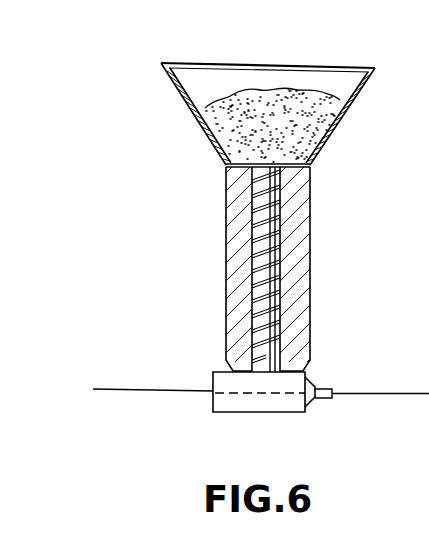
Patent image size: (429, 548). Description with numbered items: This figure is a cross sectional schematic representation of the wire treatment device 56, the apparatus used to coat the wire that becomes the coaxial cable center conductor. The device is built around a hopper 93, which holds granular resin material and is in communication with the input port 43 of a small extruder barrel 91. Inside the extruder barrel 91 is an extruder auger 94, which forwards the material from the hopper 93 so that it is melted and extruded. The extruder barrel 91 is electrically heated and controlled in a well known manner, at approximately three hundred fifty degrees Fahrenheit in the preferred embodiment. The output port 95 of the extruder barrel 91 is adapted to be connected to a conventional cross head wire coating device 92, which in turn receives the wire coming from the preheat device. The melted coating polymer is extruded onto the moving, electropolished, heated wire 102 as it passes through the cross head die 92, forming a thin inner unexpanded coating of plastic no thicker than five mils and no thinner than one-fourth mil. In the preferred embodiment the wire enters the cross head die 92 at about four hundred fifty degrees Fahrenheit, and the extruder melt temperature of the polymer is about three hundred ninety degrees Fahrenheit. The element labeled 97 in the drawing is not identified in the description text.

The hopper 93 is at (345, 70).
The input port 43 is at (225, 148).
The extruder auger 94 is at (272, 192).
The extruder barrel 91 is at (303, 268).
The cross head wire coating device 92 is at (307, 374).
The output port 95 is at (262, 374).
The heated wire 102 is at (160, 389).
The support arm 97 is at (376, 393).
The wire treatment device 56 is at (197, 408).